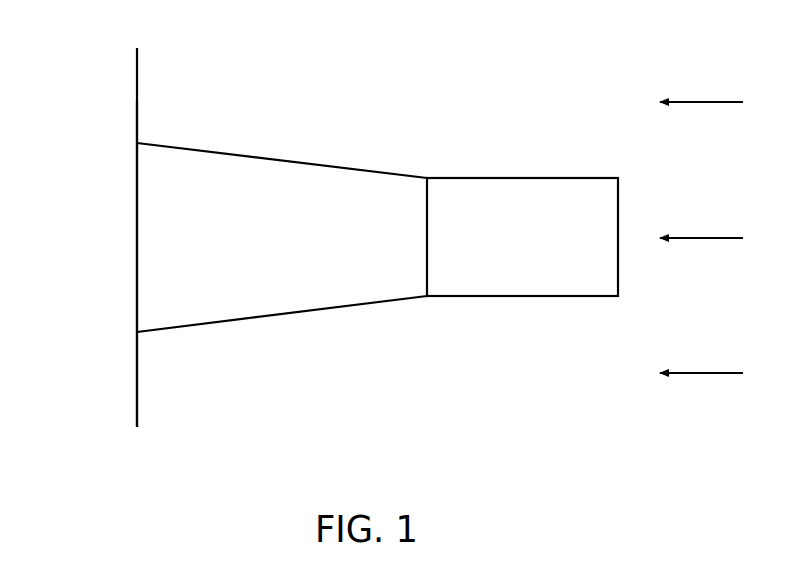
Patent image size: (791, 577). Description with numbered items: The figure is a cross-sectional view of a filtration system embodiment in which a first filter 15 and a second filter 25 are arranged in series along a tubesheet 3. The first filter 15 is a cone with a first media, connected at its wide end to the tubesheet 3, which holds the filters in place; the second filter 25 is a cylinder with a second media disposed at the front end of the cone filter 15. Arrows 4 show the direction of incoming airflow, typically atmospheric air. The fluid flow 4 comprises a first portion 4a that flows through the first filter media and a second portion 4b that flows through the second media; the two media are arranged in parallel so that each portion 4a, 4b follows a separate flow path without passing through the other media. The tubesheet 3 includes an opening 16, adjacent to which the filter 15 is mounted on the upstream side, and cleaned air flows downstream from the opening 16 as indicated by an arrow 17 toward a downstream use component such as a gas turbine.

The tubesheet 3 is at (137, 92).
The opening 16 is at (137, 260).
The first filter 15 is at (295, 160).
The second filter 25 is at (523, 178).
The arrows indicating fluid flow 4 is at (708, 100).
The first portion of fluid flow 4a is at (234, 115).
The second portion of fluid flow 4b is at (557, 131).
The arrow indicating cleaned air flow 17 is at (178, 197).